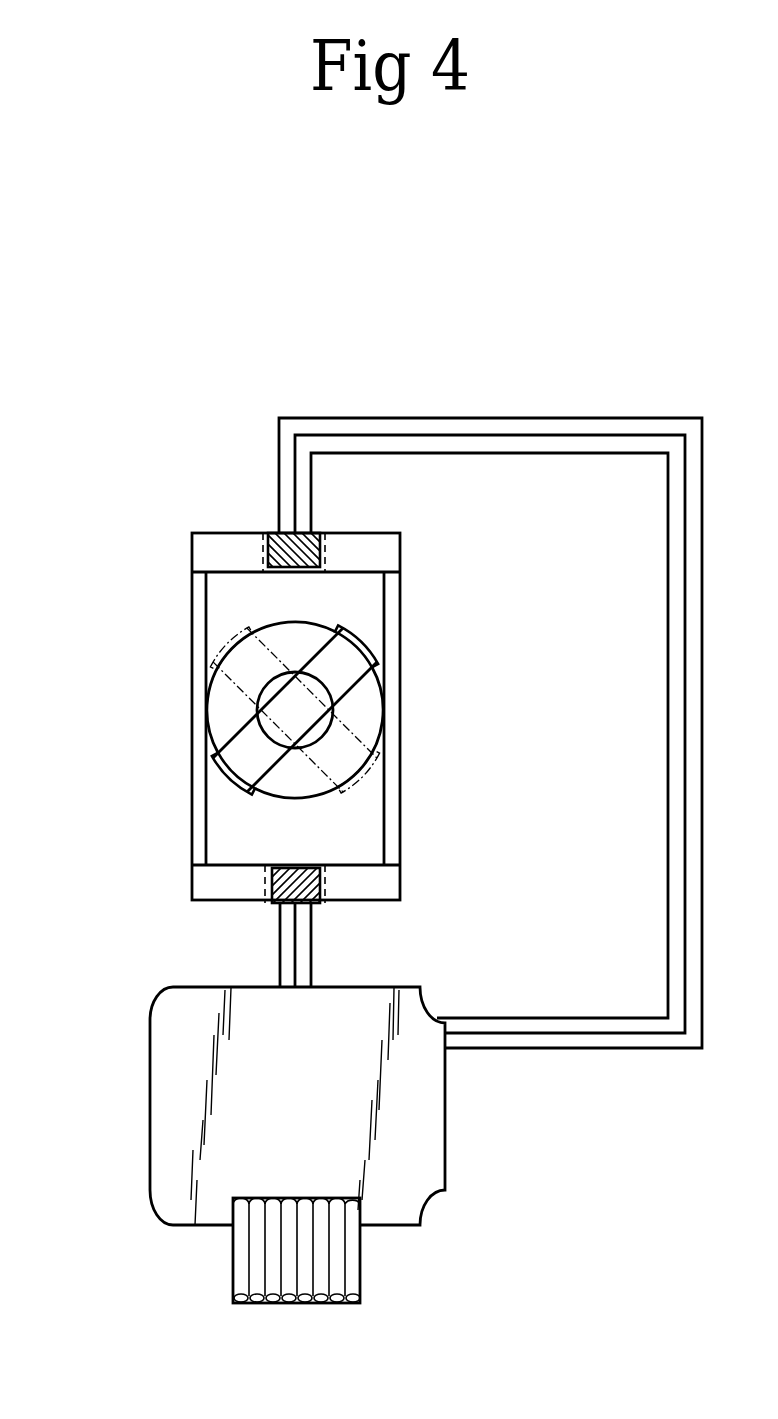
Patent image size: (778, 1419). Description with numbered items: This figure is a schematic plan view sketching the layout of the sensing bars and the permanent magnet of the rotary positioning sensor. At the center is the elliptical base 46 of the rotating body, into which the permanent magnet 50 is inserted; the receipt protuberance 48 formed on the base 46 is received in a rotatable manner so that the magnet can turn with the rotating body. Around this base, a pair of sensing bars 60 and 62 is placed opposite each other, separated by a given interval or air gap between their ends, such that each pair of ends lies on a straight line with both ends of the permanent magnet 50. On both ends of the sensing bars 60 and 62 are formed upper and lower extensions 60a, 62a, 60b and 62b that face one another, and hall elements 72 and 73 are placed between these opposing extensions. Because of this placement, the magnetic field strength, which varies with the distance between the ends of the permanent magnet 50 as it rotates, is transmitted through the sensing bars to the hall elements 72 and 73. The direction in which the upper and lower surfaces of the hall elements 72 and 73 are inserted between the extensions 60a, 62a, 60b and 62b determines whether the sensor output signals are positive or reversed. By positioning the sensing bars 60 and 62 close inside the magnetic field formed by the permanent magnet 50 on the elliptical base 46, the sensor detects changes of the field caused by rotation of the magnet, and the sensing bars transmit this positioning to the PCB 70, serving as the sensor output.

The base 46 is at (378, 742).
The receipt protuberance 48 is at (275, 705).
The permanent magnet 50 is at (355, 632).
The sensing bar 60 is at (393, 692).
The lower extension 60a is at (385, 880).
The upper extension 60b is at (385, 557).
The sensing bar 62 is at (200, 647).
The lower extension 62a is at (228, 883).
The upper extension 62b is at (223, 552).
The PCB 70 is at (428, 1095).
The hall element 72 is at (320, 905).
The hall element 73 is at (275, 533).